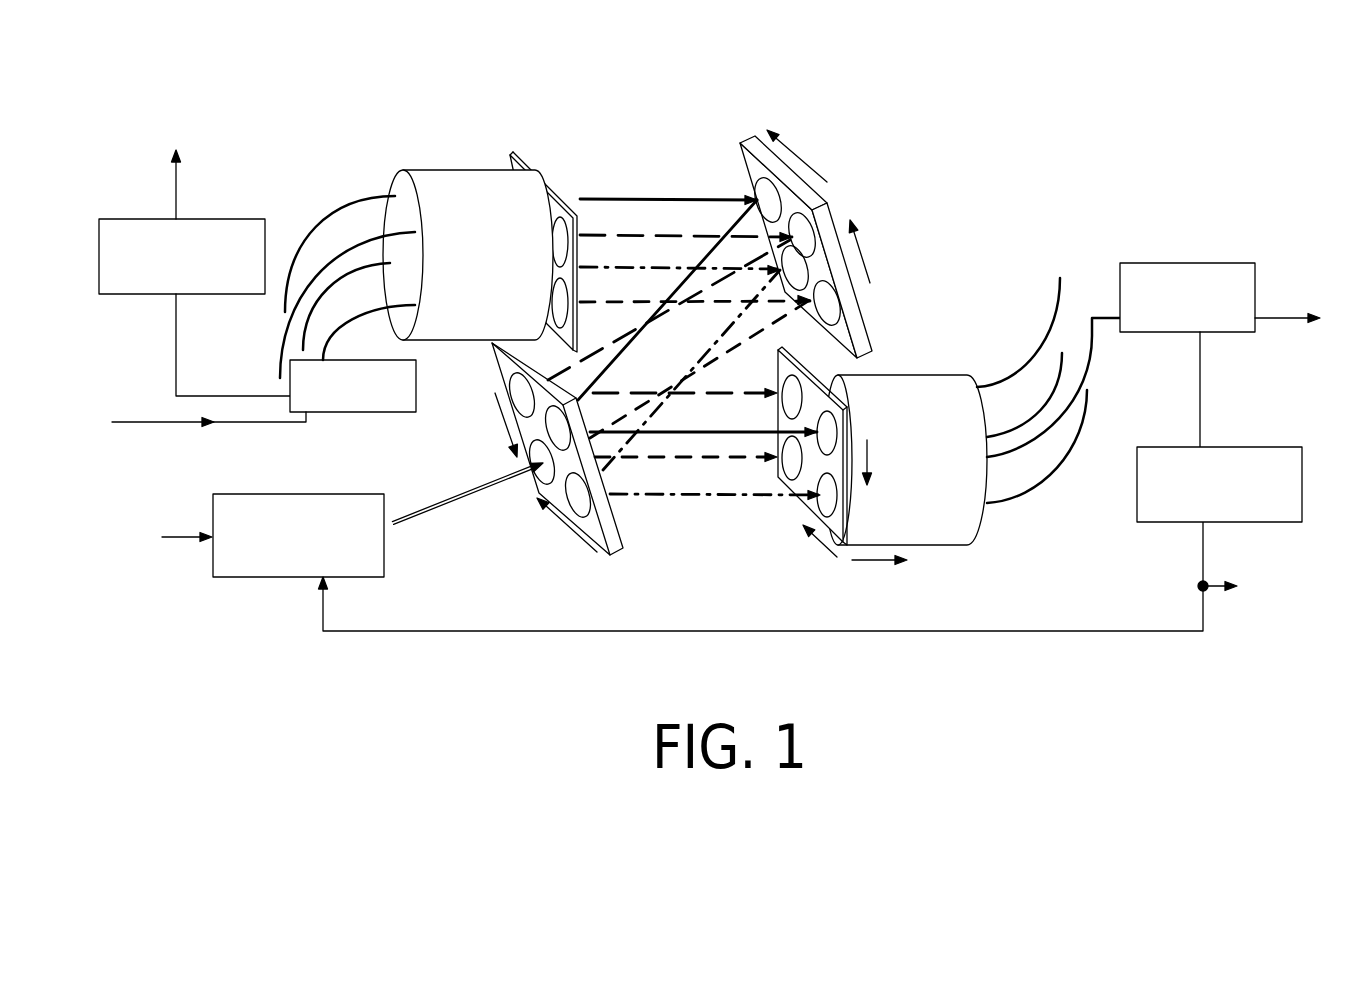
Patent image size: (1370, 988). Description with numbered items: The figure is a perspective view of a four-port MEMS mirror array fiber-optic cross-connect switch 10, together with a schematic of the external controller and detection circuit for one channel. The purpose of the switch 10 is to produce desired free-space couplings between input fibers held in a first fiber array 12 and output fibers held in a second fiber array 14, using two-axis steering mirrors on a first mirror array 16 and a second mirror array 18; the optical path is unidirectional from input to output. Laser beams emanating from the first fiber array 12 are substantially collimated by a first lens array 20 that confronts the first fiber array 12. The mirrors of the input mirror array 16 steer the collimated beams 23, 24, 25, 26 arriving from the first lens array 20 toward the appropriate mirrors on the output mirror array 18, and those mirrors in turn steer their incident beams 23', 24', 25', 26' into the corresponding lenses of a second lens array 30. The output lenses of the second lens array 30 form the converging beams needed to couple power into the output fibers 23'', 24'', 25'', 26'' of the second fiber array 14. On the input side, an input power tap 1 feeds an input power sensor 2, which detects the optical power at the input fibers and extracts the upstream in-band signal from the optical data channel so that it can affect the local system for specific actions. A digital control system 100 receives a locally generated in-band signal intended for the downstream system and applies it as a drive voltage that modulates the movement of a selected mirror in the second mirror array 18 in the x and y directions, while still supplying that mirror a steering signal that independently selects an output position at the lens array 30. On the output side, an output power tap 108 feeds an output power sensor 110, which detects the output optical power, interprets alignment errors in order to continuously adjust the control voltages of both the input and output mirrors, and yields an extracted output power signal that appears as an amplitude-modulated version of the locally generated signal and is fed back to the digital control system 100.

The input power tap 1 is at (368, 420).
The input power sensor 2 is at (128, 300).
The fiber-optic cross-connect switch 10 is at (690, 92).
The first fiber array 12 is at (453, 165).
The second fiber array 14 is at (927, 550).
The first mirror array 16 is at (840, 205).
The second mirror array 18 is at (520, 483).
The first lens array 20 is at (520, 153).
The collimated beam 23 is at (666, 189).
The collimated beam 24 is at (686, 225).
The collimated beam 25 is at (680, 258).
The collimated beam 26 is at (695, 290).
The steered beam 23' is at (703, 422).
The steered beam 24' is at (685, 383).
The steered beam 25' is at (715, 508).
The steered beam 26' is at (686, 471).
The output fiber 23'' is at (1071, 387).
The output fiber 24'' is at (1013, 332).
The output fiber 25'' is at (1056, 464).
The output fiber 26'' is at (1064, 338).
The second lens array 30 is at (798, 512).
The digital control system 100 is at (268, 482).
The output power tap 108 is at (1242, 340).
The output power sensor 110 is at (1307, 500).